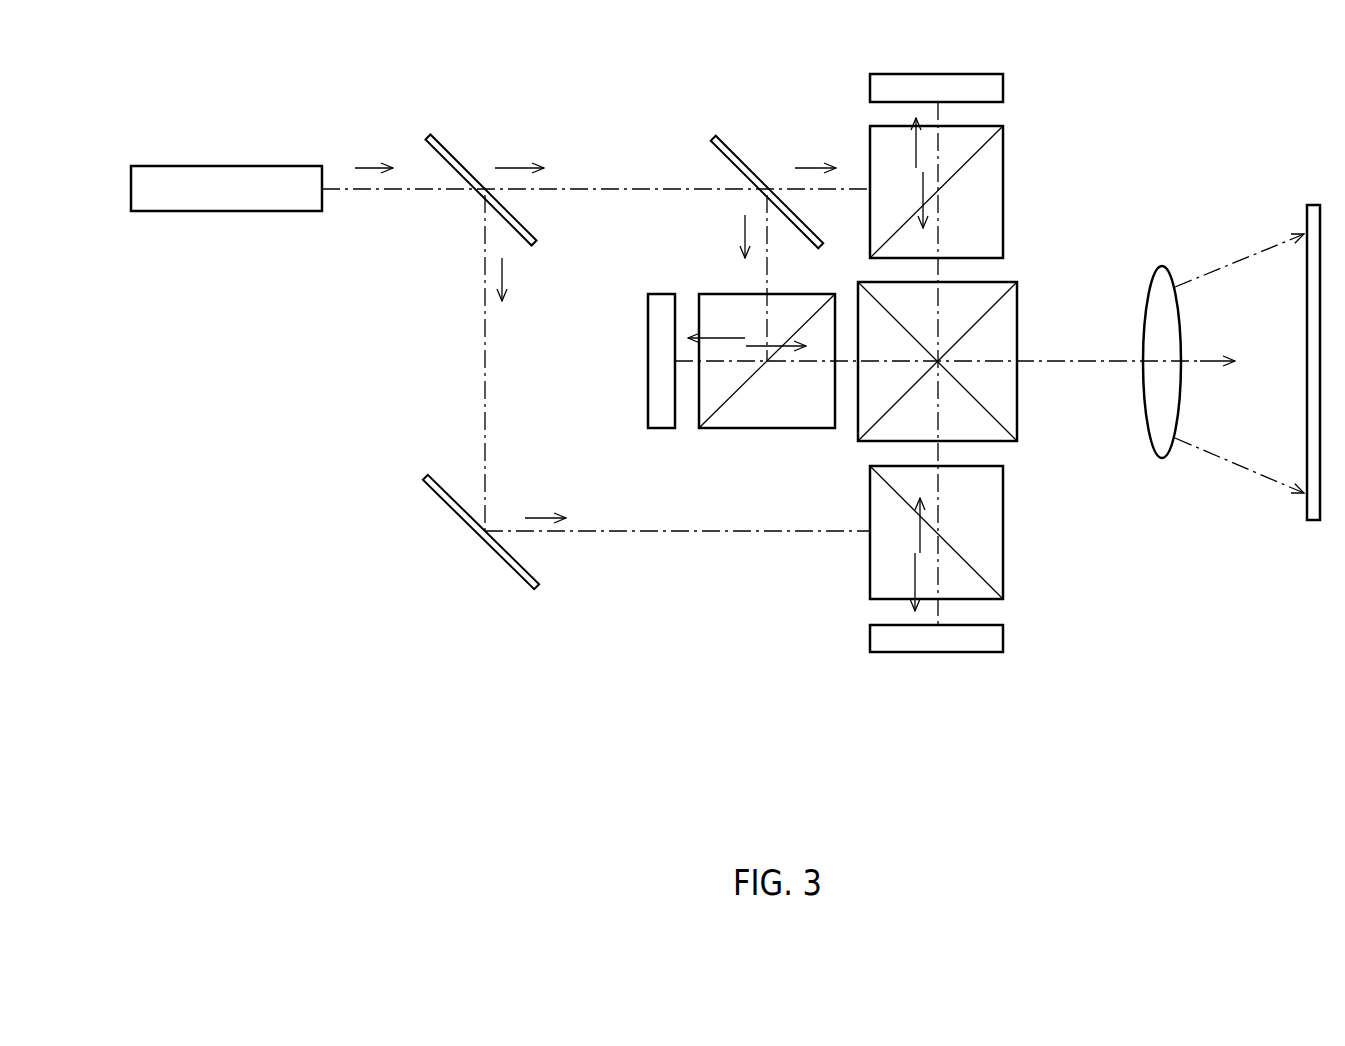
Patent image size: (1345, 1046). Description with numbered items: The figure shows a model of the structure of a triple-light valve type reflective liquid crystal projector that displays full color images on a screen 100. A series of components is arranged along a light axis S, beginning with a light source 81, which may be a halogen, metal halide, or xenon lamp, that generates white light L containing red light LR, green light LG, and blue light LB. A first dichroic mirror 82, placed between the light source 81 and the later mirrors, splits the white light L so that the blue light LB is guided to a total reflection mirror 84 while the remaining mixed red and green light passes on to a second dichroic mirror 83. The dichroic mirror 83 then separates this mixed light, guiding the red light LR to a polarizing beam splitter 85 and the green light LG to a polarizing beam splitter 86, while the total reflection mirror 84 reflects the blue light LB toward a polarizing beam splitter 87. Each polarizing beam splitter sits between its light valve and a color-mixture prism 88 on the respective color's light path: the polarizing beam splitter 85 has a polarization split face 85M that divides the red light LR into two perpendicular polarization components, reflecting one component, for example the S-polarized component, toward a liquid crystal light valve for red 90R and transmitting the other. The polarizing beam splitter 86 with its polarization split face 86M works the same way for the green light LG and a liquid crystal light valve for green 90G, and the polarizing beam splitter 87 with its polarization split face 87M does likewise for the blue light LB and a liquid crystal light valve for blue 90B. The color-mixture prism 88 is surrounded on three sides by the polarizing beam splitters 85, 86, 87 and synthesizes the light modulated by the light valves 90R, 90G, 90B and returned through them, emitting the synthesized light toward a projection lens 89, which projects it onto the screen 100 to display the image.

The light source 81 is at (304, 166).
The dichroic mirror 82 is at (450, 137).
The dichroic mirror 83 is at (728, 140).
The total reflection mirror 84 is at (513, 577).
The polarizing beam splitter 85 is at (1004, 176).
The polarization split face 85M is at (993, 137).
The polarizing beam splitter 86 is at (810, 429).
The polarization split face 86M is at (710, 412).
The polarizing beam splitter 87 is at (1004, 500).
The polarization split face 87M is at (980, 580).
The color-mixture prism 88 is at (1018, 300).
The projection lens 89 is at (1166, 268).
The liquid crystal light valve for red 90R is at (938, 74).
The liquid crystal light valve for green 90G is at (648, 360).
The liquid crystal light valve for blue 90B is at (937, 652).
The screen 100 is at (1313, 205).
The white light L is at (369, 165).
The red light LR is at (529, 165).
The green light LG is at (740, 234).
The blue light LB is at (506, 272).
The light axis S is at (416, 204).